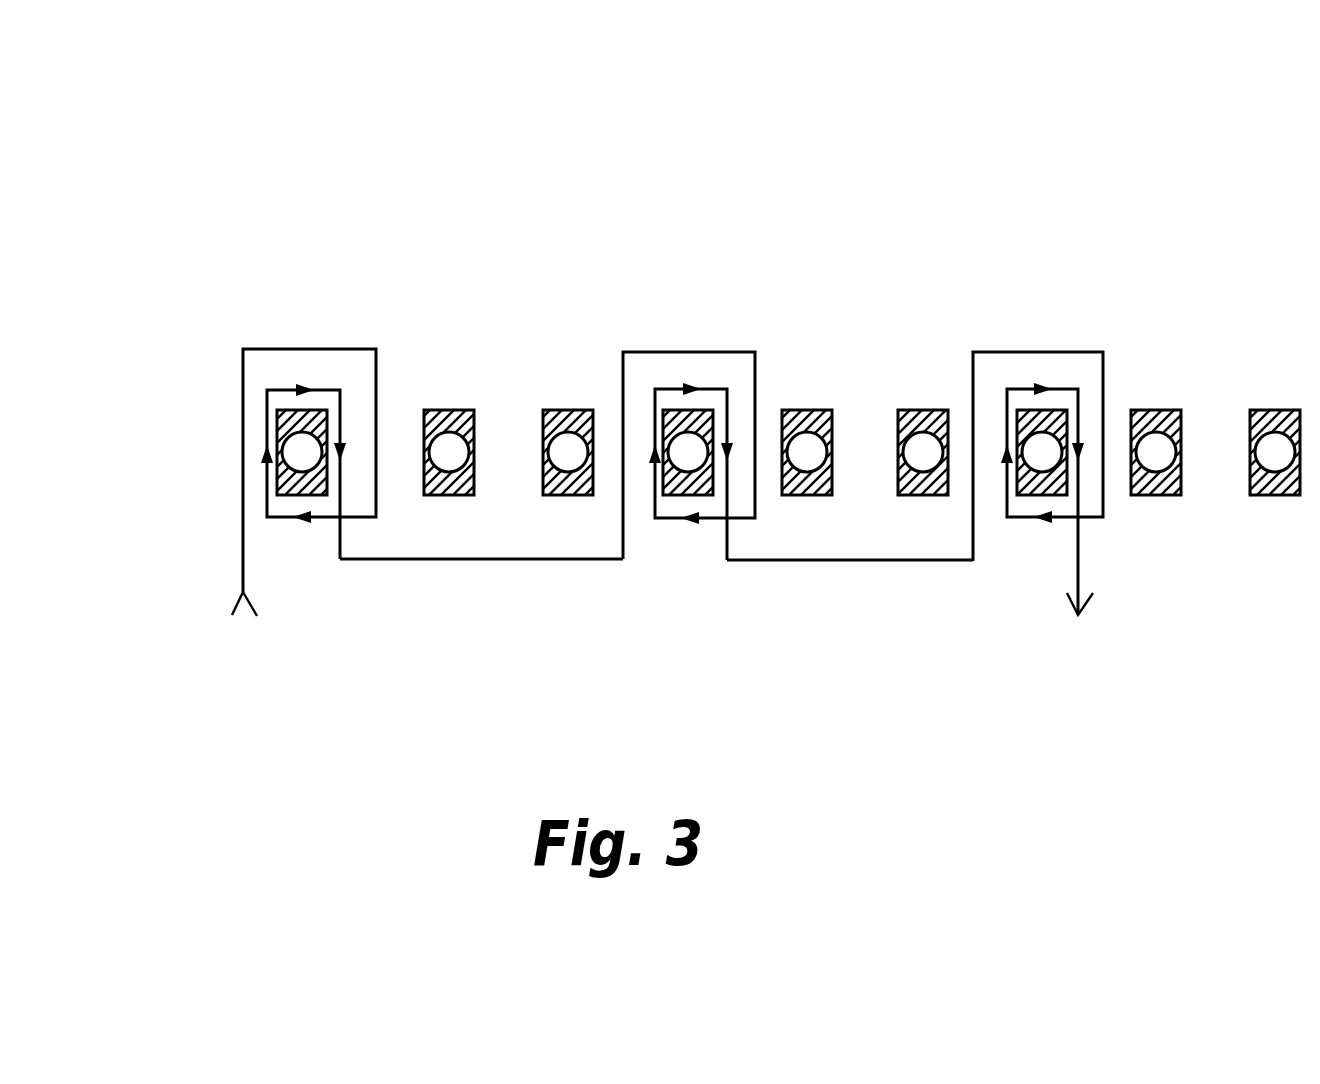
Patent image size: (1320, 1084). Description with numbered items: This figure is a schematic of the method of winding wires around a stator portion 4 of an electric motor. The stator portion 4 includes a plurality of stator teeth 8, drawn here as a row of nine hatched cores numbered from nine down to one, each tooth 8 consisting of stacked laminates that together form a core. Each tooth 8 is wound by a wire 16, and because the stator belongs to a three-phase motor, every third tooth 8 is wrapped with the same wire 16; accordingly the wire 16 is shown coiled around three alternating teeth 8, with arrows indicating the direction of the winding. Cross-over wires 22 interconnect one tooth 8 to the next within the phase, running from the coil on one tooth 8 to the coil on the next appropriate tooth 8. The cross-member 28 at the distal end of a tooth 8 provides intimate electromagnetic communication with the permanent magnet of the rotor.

The stator portion 4 is at (387, 266).
The wire 16 is at (243, 445).
The cross-over wire 22 is at (497, 561).
The cross-member 28 is at (1105, 363).
The stator tooth 8 is at (290, 487).